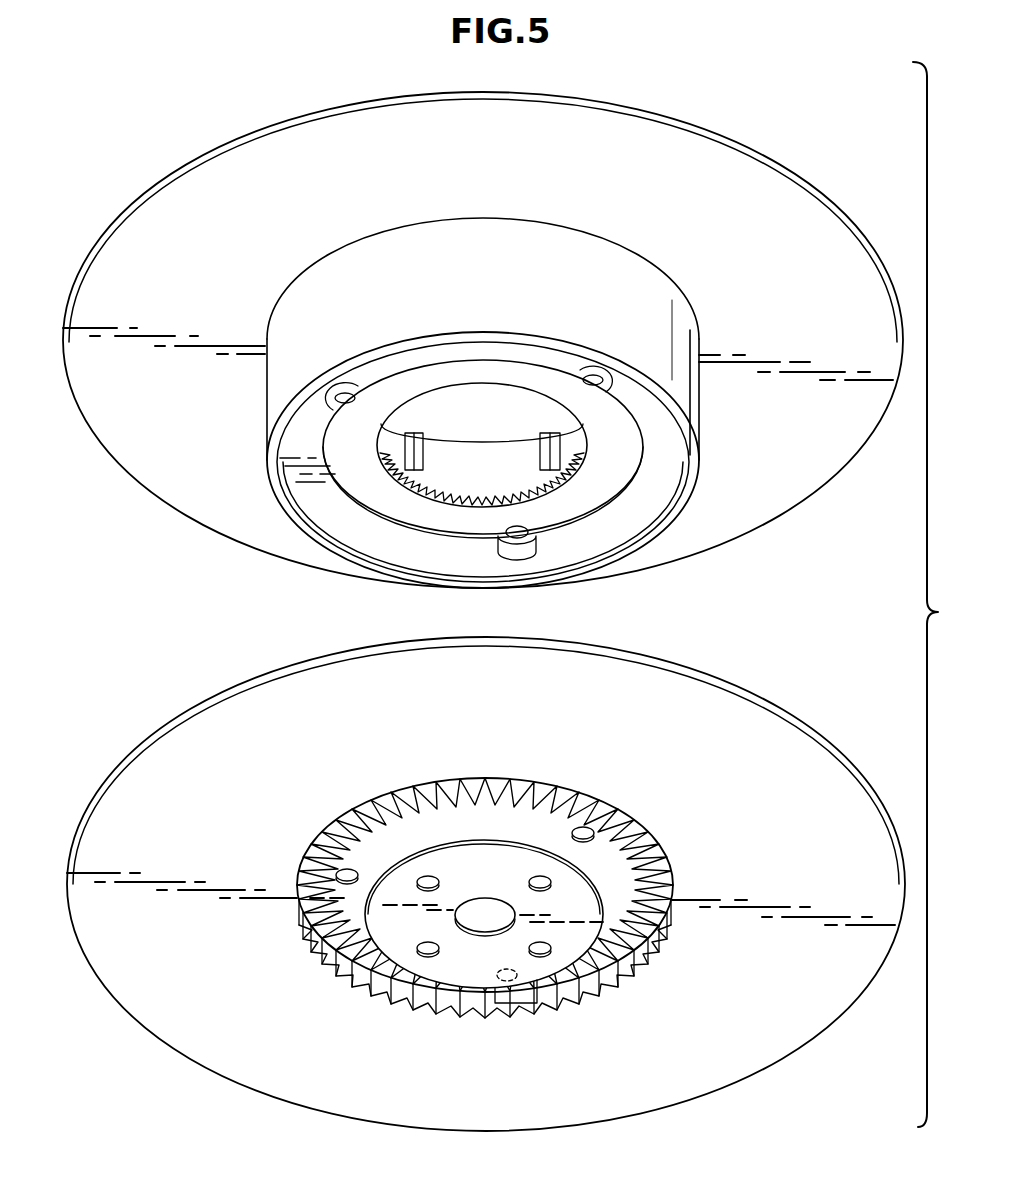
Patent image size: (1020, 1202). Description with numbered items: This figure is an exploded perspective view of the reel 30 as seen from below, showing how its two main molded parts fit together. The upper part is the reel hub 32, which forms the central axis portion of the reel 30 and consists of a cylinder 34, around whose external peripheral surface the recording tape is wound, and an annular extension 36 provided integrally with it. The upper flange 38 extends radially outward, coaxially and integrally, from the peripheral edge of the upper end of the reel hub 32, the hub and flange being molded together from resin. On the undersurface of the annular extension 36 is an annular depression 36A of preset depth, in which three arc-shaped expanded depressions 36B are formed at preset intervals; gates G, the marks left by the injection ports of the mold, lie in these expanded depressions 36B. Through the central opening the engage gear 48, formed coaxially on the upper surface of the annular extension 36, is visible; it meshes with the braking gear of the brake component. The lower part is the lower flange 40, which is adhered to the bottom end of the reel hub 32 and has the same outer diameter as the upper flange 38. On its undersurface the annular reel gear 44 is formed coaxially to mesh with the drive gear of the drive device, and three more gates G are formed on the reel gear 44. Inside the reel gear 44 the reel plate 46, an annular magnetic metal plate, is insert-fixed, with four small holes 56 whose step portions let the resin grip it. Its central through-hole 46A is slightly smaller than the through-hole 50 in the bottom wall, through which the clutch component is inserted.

The reel 30 is at (782, 125).
The reel hub 32 is at (511, 386).
The cylinder 34 is at (503, 258).
The annular extension 36 is at (655, 490).
The annular depression 36A is at (600, 475).
The expanded depressions 36B is at (528, 550).
The upper flange 38 is at (786, 212).
The lower flange 40 is at (803, 760).
The reel gear 44 is at (643, 960).
The reel plate 46 is at (466, 962).
The through-hole 46A is at (500, 930).
The engage gear 48 is at (470, 482).
The through-hole 50 is at (538, 980).
The small holes 56 is at (428, 956).
The gates G is at (517, 538).